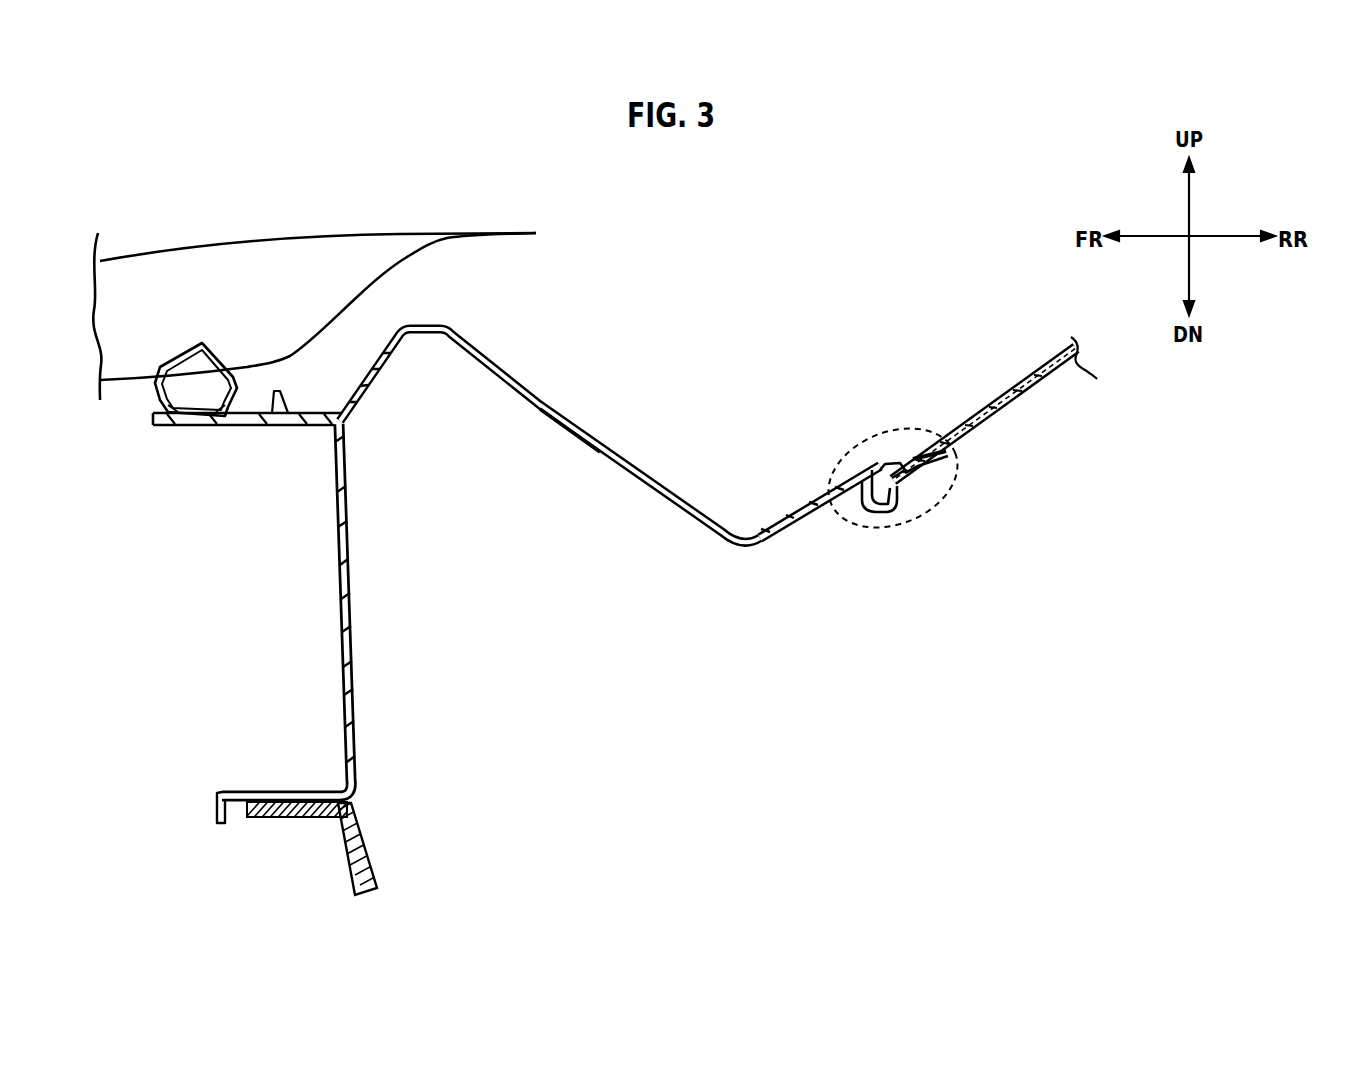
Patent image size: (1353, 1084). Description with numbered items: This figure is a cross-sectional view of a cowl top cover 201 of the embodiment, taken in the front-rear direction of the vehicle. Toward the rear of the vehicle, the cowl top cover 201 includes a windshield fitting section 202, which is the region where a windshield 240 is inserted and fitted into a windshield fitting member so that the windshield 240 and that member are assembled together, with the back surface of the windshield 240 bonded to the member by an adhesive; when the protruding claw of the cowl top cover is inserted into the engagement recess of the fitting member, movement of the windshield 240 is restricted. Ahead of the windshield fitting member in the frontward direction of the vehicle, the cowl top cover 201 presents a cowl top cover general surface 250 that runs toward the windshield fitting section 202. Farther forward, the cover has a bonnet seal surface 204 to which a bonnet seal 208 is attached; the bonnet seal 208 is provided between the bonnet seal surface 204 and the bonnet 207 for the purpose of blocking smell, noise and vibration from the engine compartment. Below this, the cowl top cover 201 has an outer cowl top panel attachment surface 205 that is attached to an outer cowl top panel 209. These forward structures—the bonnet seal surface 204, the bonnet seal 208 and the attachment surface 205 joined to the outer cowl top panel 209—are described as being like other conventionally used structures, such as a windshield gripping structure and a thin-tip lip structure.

The cowl top cover 201 is at (436, 316).
The windshield fitting section 202 is at (867, 437).
The bonnet seal surface 204 is at (177, 425).
The outer cowl top panel attachment surface 205 is at (277, 790).
The bonnet 207 is at (309, 252).
The bonnet seal 208 is at (213, 350).
The outer cowl top panel 209 is at (361, 834).
The windshield 240 is at (1029, 366).
The cowl top cover general surface 250 is at (780, 513).